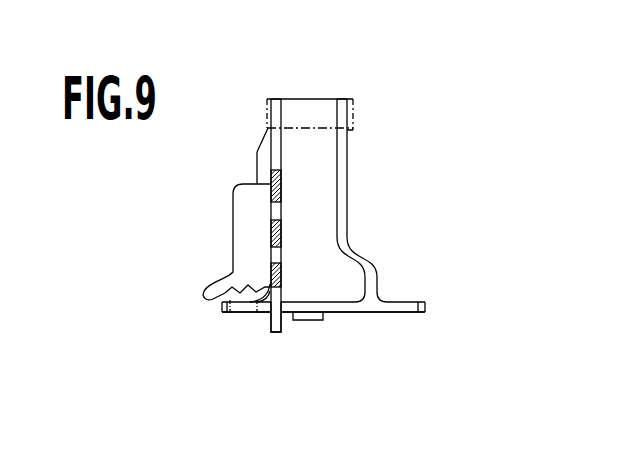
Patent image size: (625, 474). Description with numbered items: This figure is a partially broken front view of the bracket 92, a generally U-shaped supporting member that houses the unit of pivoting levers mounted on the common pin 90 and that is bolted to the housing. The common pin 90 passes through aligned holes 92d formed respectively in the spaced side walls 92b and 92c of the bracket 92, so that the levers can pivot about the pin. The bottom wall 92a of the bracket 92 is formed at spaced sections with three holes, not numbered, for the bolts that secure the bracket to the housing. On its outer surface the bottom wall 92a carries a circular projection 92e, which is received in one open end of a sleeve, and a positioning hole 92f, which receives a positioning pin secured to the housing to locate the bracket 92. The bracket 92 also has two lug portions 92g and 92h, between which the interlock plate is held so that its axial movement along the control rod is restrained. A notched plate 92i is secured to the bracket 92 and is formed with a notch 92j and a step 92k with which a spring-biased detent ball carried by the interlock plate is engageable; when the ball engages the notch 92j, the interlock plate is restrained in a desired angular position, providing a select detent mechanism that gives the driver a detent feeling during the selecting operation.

The common pin 90 is at (315, 112).
The bracket 92 is at (352, 207).
The bottom wall 92a is at (265, 315).
The side wall 92b is at (279, 100).
The side wall 92c is at (340, 96).
The hole 92d is at (281, 103).
The circular projection 92e is at (313, 322).
The positioning hole 92f is at (251, 313).
The lug portion 92g is at (283, 320).
The lug portion 92h is at (360, 357).
The notched plate 92i is at (243, 200).
The notch 92j is at (228, 314).
The step 92k is at (248, 288).